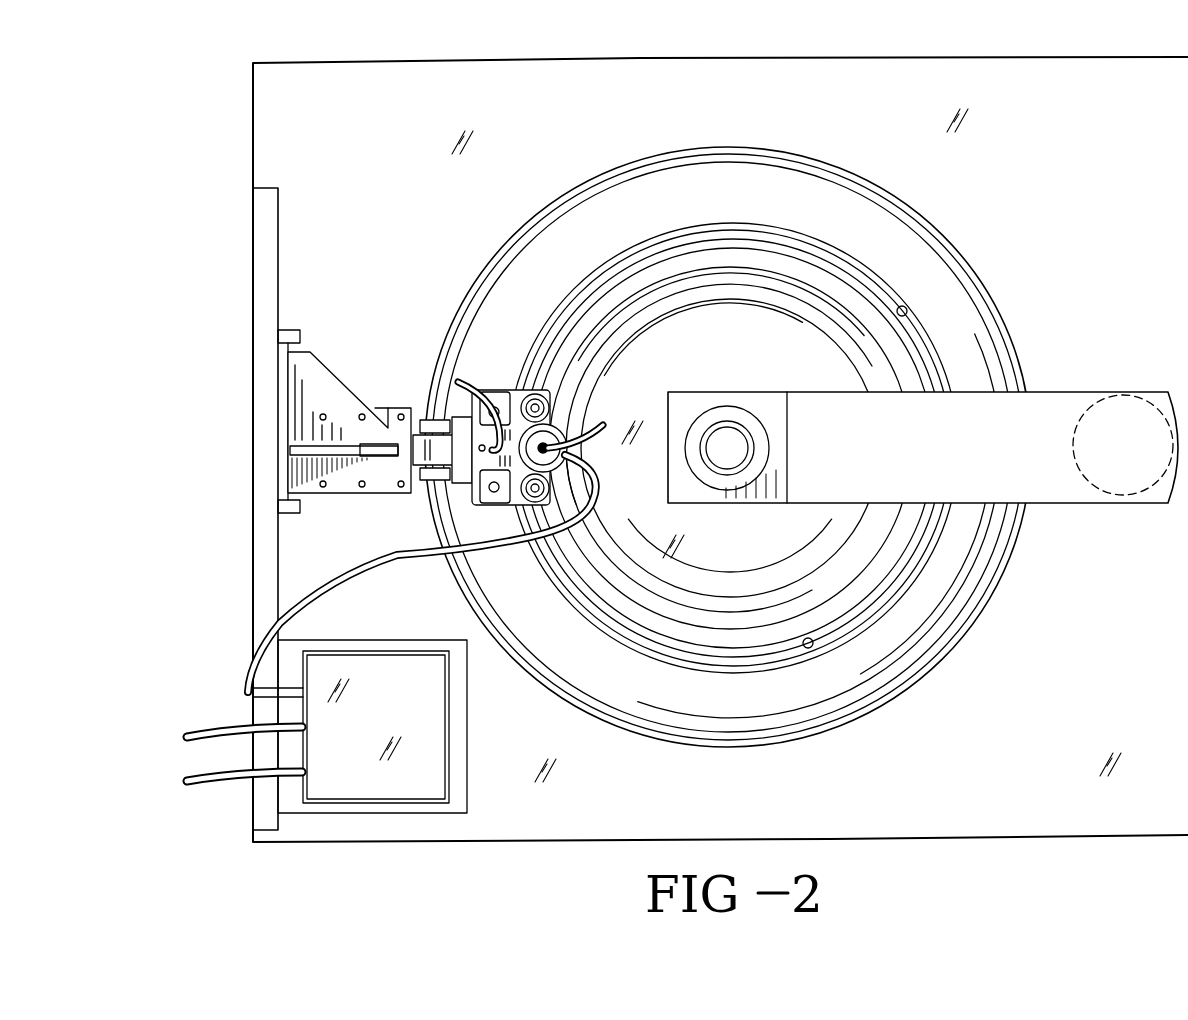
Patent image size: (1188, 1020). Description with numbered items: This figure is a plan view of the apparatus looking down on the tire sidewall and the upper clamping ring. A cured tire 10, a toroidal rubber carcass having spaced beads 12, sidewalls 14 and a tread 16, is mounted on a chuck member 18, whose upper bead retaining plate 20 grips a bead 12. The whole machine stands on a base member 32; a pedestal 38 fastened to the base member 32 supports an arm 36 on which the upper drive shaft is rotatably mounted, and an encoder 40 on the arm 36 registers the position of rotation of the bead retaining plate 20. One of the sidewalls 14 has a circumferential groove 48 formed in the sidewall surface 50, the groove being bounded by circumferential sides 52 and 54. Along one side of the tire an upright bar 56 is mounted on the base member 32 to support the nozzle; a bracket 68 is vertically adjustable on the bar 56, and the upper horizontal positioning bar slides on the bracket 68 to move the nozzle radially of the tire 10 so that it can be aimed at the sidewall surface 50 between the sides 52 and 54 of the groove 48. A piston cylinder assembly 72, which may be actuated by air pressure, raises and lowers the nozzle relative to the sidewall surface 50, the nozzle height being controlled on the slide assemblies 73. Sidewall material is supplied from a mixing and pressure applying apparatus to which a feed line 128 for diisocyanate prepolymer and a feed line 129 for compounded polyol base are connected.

The cured tire 10 is at (1020, 525).
The beads 12 is at (830, 560).
The sidewalls 14 is at (1000, 345).
The tread 16 is at (935, 225).
The chuck member 18 is at (835, 337).
The upper bead retaining plate 20 is at (700, 365).
The base member 32 is at (1165, 140).
The arm 36 is at (1062, 410).
The pedestal 38 is at (1148, 490).
The encoder 40 is at (752, 470).
The circumferential groove 48 is at (920, 550).
The sidewall surface 50 is at (868, 615).
The circumferential side 52 is at (808, 640).
The circumferential side 54 is at (902, 312).
The bar 56 is at (265, 245).
The bracket 68 is at (318, 378).
The piston cylinder assembly 72 is at (510, 458).
The slide assemblies 73 is at (530, 385).
The feed line 128 is at (220, 730).
The feed line 129 is at (220, 785).